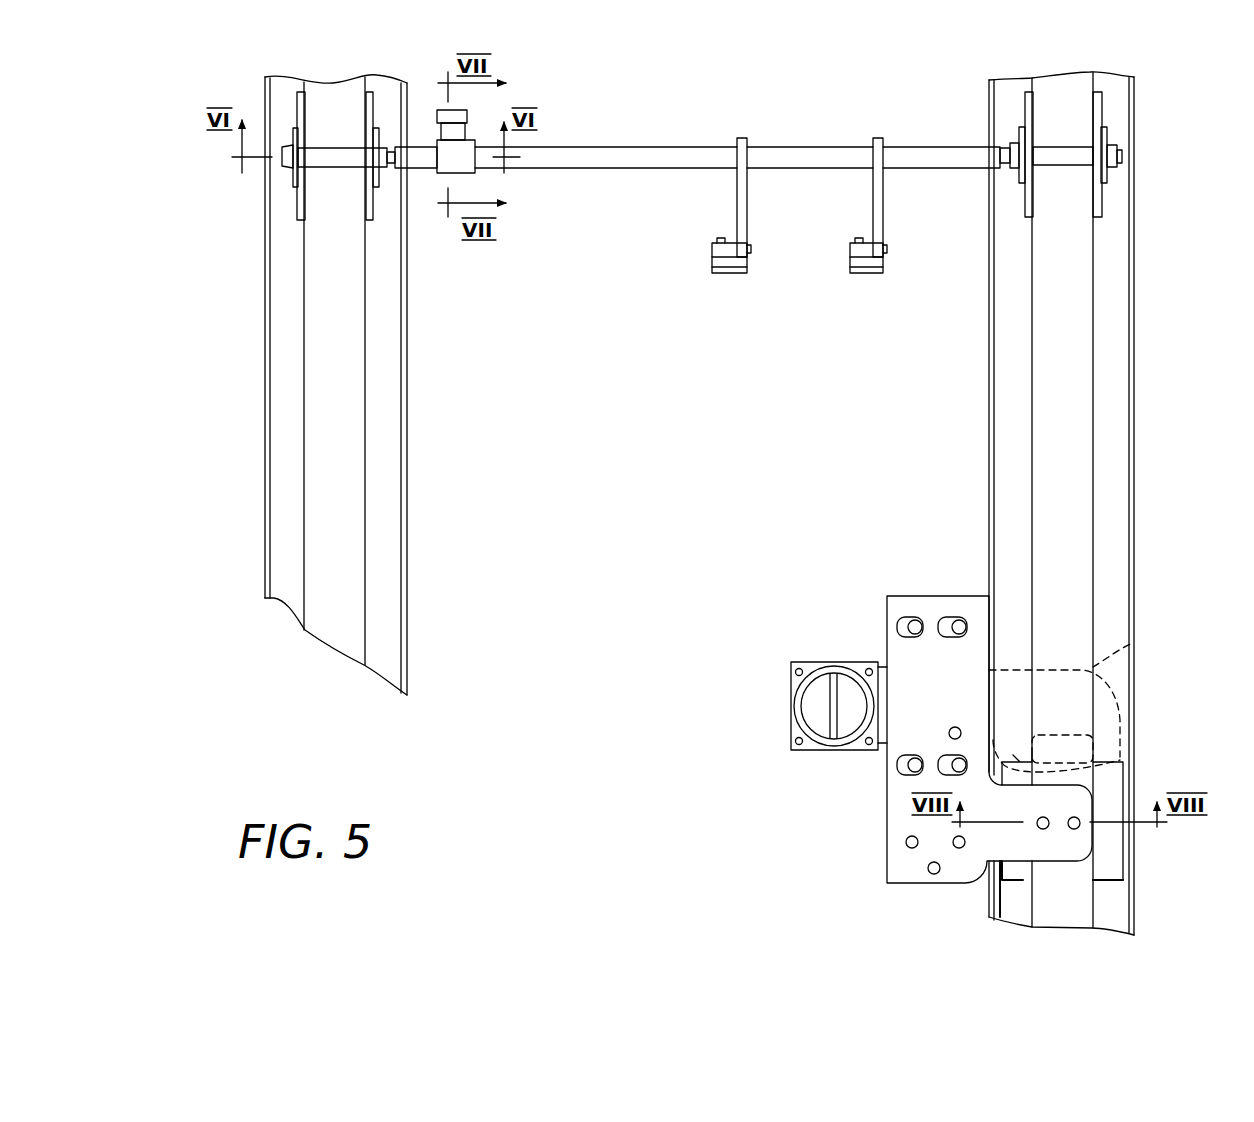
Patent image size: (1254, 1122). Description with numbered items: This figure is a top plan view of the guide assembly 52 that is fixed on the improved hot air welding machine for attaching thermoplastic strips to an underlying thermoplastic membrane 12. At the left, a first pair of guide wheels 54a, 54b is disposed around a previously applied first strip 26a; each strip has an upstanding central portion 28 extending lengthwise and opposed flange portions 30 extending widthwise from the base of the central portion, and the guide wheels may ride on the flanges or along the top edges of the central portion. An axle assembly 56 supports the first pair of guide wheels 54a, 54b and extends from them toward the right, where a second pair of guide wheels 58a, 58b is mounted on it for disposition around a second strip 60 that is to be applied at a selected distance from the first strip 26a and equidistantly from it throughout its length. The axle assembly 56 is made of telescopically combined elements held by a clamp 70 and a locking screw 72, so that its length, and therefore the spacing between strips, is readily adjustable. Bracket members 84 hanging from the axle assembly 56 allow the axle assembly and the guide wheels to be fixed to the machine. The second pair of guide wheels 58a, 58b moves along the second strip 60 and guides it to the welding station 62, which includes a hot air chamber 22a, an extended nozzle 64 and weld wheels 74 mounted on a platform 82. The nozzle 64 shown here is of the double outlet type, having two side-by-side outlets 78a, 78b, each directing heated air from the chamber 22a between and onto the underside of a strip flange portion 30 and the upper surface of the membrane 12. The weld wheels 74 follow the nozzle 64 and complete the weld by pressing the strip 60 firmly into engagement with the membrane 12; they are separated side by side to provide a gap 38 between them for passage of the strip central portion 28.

The thermoplastic membrane 12 is at (678, 403).
The chamber 22a is at (792, 690).
The first strip 26a is at (268, 486).
The central portion 28 is at (305, 378).
The flange portions 30 is at (280, 437).
The gap 38 is at (1057, 870).
The guide assembly 52 is at (734, 96).
The first guide wheel 54a is at (298, 205).
The first guide wheel 54b is at (375, 213).
The axle assembly 56 is at (817, 145).
The second guide wheel 58a is at (1025, 110).
The second guide wheel 58b is at (1097, 118).
The second strip 60 is at (1135, 320).
The welding station 62 is at (836, 797).
The extended nozzle 64 is at (1133, 643).
The clamp 70 is at (446, 170).
The locking screw 72 is at (440, 110).
The weld wheels 74 is at (1013, 872).
The outlet 78a is at (1133, 762).
The outlet 78b is at (1133, 737).
The platform 82 is at (900, 863).
The bracket members 84 is at (850, 257).